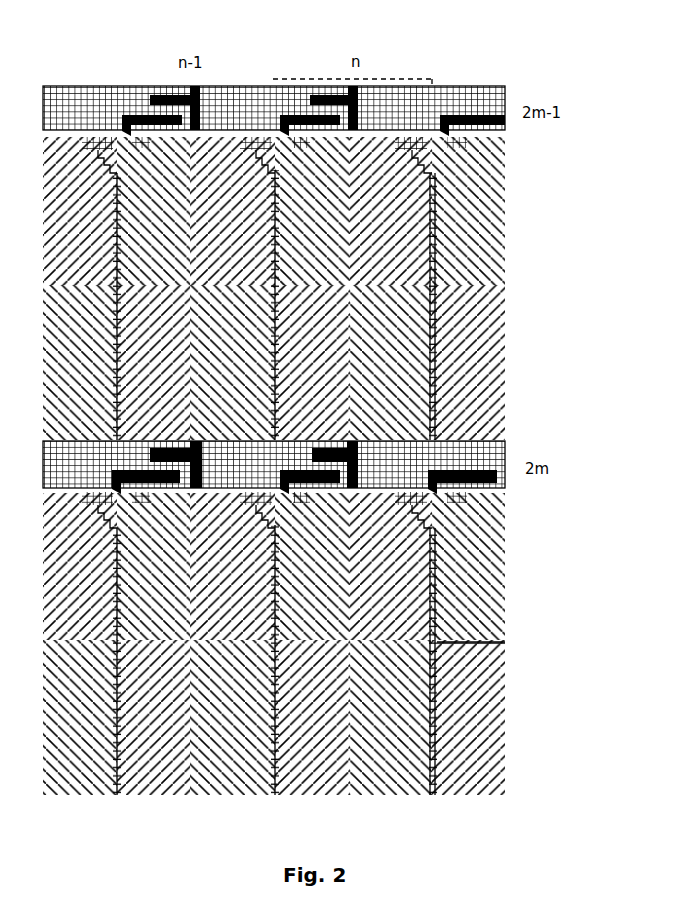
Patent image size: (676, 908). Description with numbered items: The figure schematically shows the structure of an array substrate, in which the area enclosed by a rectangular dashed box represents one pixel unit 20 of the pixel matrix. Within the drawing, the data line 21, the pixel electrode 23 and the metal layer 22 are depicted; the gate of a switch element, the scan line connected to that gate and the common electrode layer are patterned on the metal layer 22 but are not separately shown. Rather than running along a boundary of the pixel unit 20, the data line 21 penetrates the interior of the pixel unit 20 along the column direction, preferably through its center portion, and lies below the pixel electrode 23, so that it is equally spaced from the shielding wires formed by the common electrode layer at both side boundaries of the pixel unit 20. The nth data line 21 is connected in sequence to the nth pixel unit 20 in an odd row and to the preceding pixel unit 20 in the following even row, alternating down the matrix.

The pixel unit 20 is at (273, 86).
The data line 21 is at (359, 86).
The metal layer 22 is at (480, 87).
The pixel electrode 23 is at (485, 207).